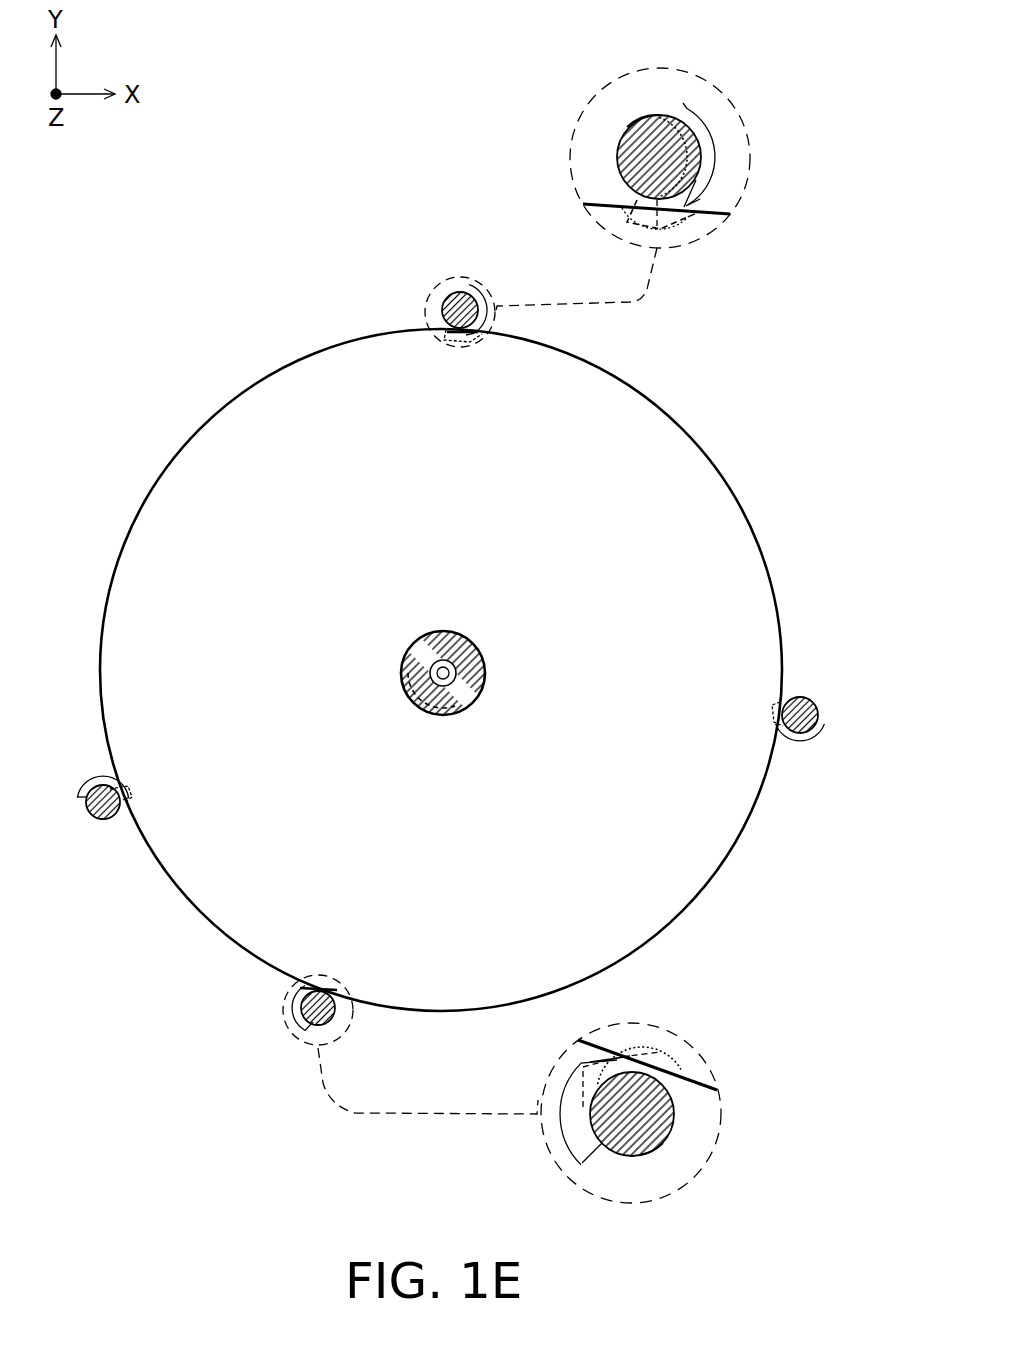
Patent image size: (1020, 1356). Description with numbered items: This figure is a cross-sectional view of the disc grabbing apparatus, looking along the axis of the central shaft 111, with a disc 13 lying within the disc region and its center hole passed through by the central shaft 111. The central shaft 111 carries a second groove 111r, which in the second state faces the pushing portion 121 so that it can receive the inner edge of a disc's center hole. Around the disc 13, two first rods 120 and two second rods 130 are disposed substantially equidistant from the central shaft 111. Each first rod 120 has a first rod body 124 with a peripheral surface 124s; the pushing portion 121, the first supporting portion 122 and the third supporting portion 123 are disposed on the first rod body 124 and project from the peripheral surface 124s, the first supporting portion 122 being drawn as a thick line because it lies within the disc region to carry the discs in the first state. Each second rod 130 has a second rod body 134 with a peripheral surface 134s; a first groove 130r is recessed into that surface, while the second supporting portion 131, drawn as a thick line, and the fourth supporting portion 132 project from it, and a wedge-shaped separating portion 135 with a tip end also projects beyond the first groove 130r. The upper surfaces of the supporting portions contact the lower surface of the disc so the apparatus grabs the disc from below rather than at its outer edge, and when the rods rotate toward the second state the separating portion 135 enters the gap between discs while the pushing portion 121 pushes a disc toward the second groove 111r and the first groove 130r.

The disc 13 is at (693, 485).
The central shaft 111 is at (430, 633).
The second groove 111r is at (400, 675).
The first rod 120 is at (111, 832).
The pushing portion 121 is at (560, 1138).
The first supporting portion 122 is at (685, 1072).
The third supporting portion 123 is at (578, 1040).
The first rod body 124 is at (652, 1120).
The peripheral surface of the first rod body 124s is at (663, 1143).
The second rod 130 is at (805, 685).
The first groove 130r is at (690, 122).
The second supporting portion 131 is at (653, 223).
The fourth supporting portion 132 is at (713, 193).
The second rod body 134 is at (656, 147).
The peripheral surface of the second rod body 134s is at (627, 127).
The separating portion 135 is at (713, 136).